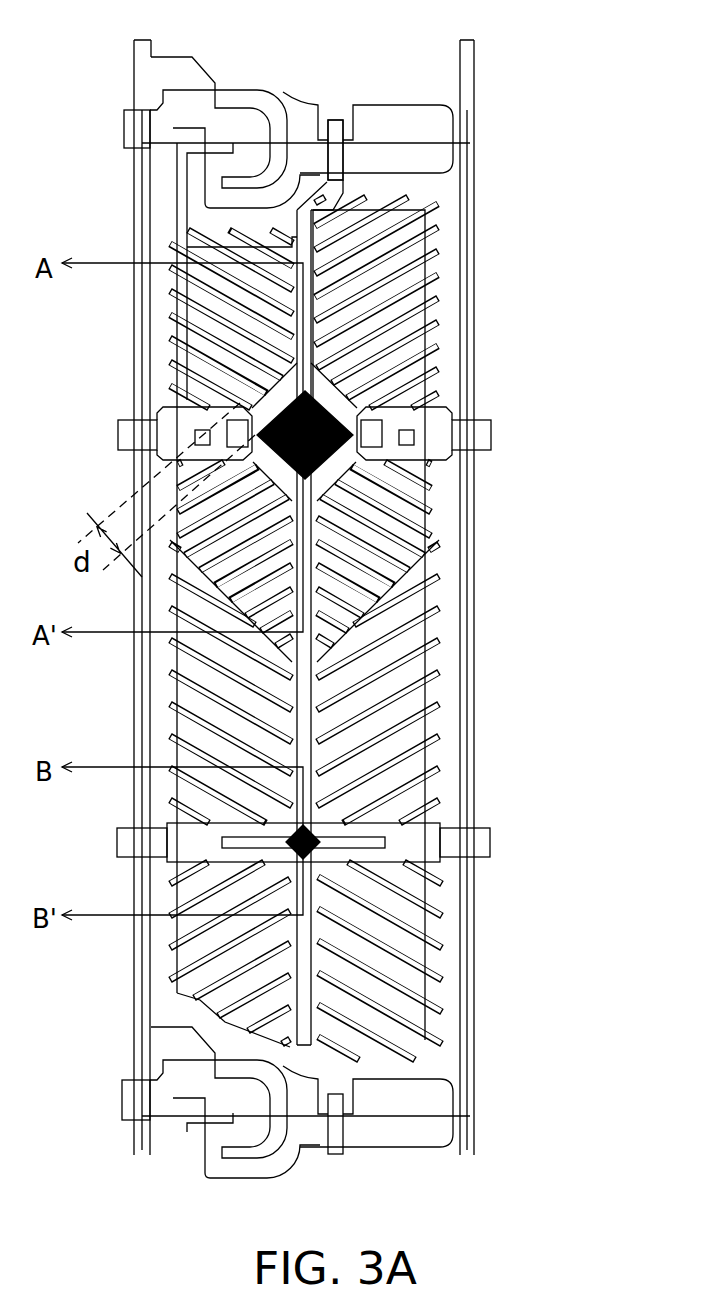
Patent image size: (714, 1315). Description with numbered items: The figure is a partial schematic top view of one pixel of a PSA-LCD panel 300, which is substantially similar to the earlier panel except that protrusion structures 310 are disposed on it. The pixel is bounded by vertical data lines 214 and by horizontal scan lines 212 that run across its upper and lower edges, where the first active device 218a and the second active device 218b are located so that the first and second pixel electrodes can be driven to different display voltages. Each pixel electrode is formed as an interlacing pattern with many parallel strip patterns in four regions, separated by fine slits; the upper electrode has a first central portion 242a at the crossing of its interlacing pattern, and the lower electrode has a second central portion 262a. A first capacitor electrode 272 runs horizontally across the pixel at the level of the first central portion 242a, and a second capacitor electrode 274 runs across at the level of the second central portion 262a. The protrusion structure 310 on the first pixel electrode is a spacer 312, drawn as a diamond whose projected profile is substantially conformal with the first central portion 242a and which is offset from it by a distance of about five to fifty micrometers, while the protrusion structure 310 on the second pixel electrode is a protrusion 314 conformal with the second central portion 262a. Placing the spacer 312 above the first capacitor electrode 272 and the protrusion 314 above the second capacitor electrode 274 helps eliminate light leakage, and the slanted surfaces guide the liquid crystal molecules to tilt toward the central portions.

The scan line 212 is at (392, 120).
The data line 214 is at (134, 178).
The first active device 218a is at (253, 80).
The second active device 218b is at (343, 100).
The first central portion 242a is at (353, 400).
The second central portion 262a is at (330, 860).
The first capacitor electrode 272 is at (120, 437).
The second capacitor electrode 274 is at (115, 838).
The LCD panel 300 is at (670, 1190).
The protrusion structure 310 is at (587, 618).
The spacer 312 is at (320, 455).
The protrusion 314 is at (320, 842).